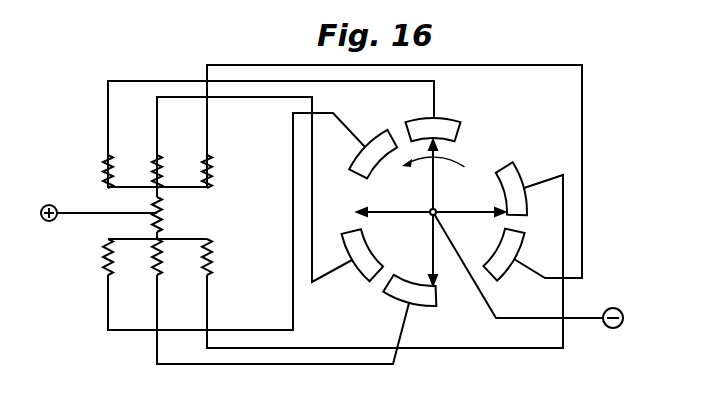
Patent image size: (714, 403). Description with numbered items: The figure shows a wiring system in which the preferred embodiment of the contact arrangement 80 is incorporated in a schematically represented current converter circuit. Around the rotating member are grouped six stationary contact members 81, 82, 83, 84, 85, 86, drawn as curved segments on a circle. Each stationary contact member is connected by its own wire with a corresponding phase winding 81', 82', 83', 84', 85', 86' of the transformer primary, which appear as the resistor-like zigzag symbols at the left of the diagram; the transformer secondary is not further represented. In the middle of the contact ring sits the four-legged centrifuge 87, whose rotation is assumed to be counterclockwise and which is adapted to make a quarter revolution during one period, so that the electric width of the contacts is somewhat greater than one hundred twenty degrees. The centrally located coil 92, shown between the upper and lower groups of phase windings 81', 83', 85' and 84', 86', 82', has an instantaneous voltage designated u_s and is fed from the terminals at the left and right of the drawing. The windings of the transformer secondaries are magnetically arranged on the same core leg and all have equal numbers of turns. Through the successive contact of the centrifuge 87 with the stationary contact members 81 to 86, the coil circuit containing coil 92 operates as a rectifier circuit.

The contact arrangement 80 is at (481, 156).
The stationary contact member 81 is at (448, 118).
The stationary contact member 82 is at (525, 182).
The stationary contact member 83 is at (349, 255).
The stationary contact member 84 is at (360, 154).
The stationary contact member 85 is at (520, 255).
The stationary contact member 86 is at (397, 298).
The four-legged centrifuge 87 is at (424, 192).
The phase winding 81' is at (268, 134).
The phase winding 82' is at (382, 261).
The phase winding 83' is at (252, 189).
The phase winding 84' is at (234, 221).
The phase winding 85' is at (392, 171).
The phase winding 86' is at (280, 301).
The coil 92 is at (164, 209).